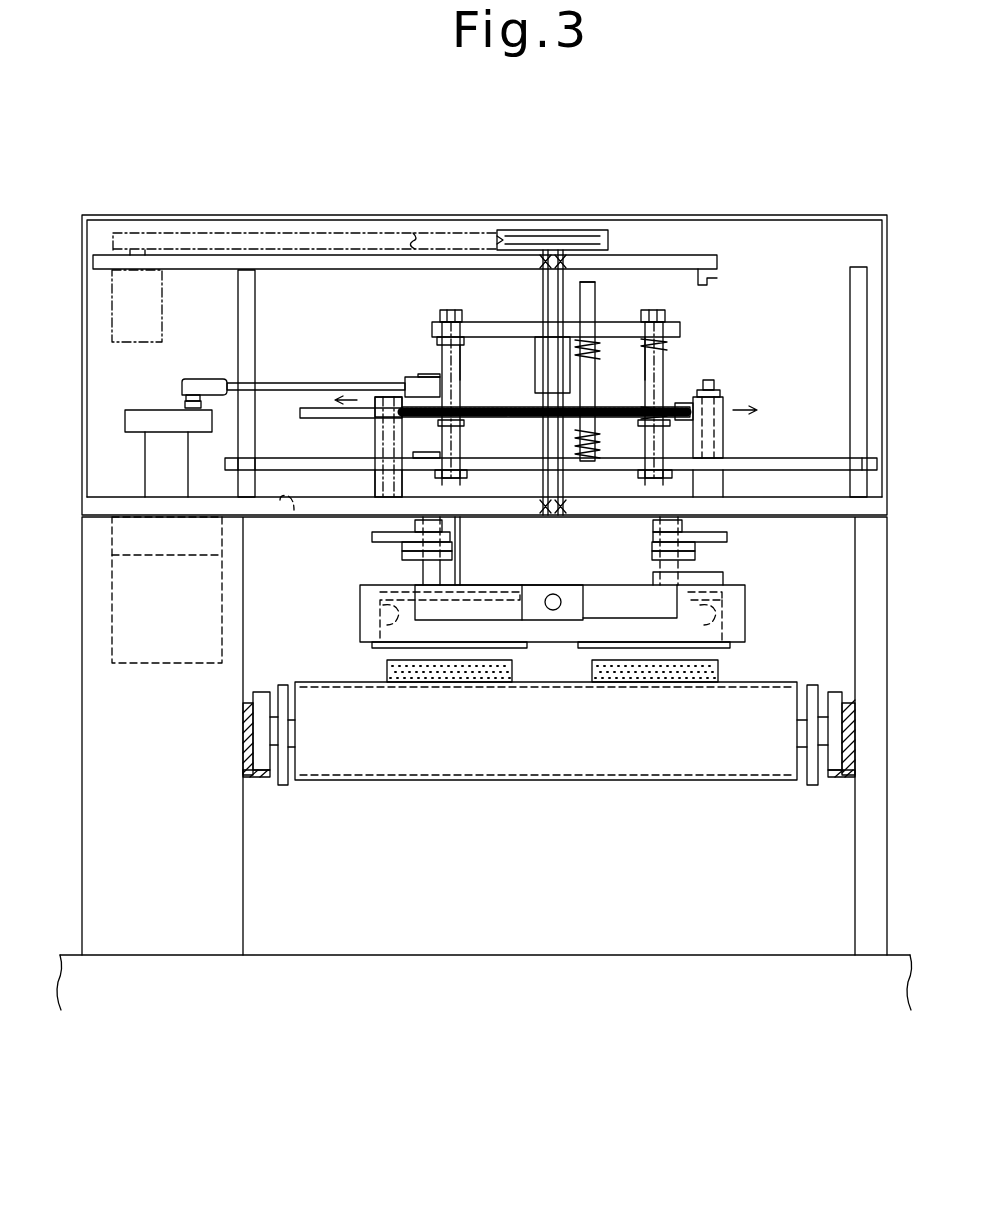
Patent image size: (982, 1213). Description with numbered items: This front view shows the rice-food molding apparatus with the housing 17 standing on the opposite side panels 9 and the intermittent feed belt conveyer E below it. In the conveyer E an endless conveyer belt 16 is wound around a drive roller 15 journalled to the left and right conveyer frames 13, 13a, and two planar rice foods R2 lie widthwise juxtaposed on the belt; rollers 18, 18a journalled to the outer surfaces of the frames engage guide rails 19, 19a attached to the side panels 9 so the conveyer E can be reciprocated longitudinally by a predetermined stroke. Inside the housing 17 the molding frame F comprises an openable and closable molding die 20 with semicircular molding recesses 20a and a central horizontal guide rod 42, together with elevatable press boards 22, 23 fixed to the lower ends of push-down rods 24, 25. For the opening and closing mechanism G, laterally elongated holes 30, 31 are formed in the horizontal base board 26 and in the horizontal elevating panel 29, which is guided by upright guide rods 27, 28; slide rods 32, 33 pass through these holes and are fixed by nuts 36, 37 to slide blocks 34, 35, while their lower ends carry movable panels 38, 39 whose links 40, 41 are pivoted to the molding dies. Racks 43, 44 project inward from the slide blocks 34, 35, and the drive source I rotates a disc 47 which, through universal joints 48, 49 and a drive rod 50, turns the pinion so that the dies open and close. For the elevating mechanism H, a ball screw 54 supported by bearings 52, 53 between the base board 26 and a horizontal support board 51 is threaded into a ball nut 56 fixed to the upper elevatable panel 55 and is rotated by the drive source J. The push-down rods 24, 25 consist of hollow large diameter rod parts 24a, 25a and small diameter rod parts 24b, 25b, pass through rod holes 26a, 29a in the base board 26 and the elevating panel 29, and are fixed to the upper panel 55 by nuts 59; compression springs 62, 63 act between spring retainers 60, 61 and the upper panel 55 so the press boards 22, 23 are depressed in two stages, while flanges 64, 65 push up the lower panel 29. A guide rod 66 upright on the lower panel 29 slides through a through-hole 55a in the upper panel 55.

The side panel 9 is at (243, 925).
The conveyer frame 13 is at (283, 787).
The side plate 13a is at (812, 787).
The drive roller 15 is at (471, 780).
The endless conveyer belt 16 is at (605, 782).
The housing 17 is at (770, 215).
The roller 18 is at (262, 692).
The roller 18a is at (836, 692).
The guide rail 19 is at (258, 778).
The guide rail 19a is at (839, 778).
The molding die 20 is at (360, 622).
The molding recess 20a is at (382, 602).
The press board 22 is at (407, 600).
The press board 23 is at (700, 600).
The push-down rod 24 is at (472, 444).
The large diameter rod part 24a is at (462, 545).
The small diameter rod part 24b is at (461, 370).
The push-down rod 25 is at (636, 440).
The large diameter rod part 25a is at (648, 540).
The small diameter rod part 25b is at (657, 355).
The horizontal base board 26 is at (802, 517).
The rod hole 26a is at (448, 523).
The guide rod 27 is at (238, 289).
The guide rod 28 is at (850, 280).
The horizontal elevating panel 29 is at (787, 458).
The rod hole 29a is at (440, 470).
The laterally elongated hole 30 is at (277, 458).
The laterally elongated hole 31 is at (824, 458).
The slide rod 32 is at (375, 485).
The slide rod 33 is at (723, 486).
The slide block 34 is at (375, 437).
The slide block 35 is at (723, 431).
The nut 36 is at (376, 396).
The nut 37 is at (720, 390).
The horizontal movable panel 38 is at (372, 535).
The horizontal movable panel 39 is at (727, 537).
The link 40 is at (402, 555).
The link 41 is at (695, 553).
The horizontal guide rod 42 is at (553, 612).
The rack 43 is at (690, 407).
The rack 44 is at (308, 408).
The disc 47 is at (150, 410).
The universal joint 48 is at (210, 380).
The universal joint 49 is at (430, 375).
The drive rod 50 is at (340, 383).
The horizontal support board 51 is at (357, 255).
The bearing 52 is at (546, 517).
The bearing 53 is at (495, 257).
The ball screw 54 is at (543, 307).
The upper elevatable panel 55 is at (487, 322).
The through-hole 55a is at (598, 338).
The ball nut 56 is at (535, 353).
The nut 59 is at (286, 238).
The spring retainer 60 is at (445, 450).
The spring retainer 61 is at (669, 426).
The compression spring 62 is at (458, 404).
The compression spring 63 is at (600, 390).
The flange 64 is at (468, 478).
The flange 65 is at (636, 480).
The guide rod 66 is at (596, 282).
The intermittent feed belt conveyer E is at (545, 794).
The molding frame F is at (760, 608).
The opening and closing mechanism G is at (323, 371).
The elevating mechanism H is at (623, 226).
The drive source I is at (112, 627).
The drive source J is at (112, 306).
The planar rice food R2 is at (437, 683).